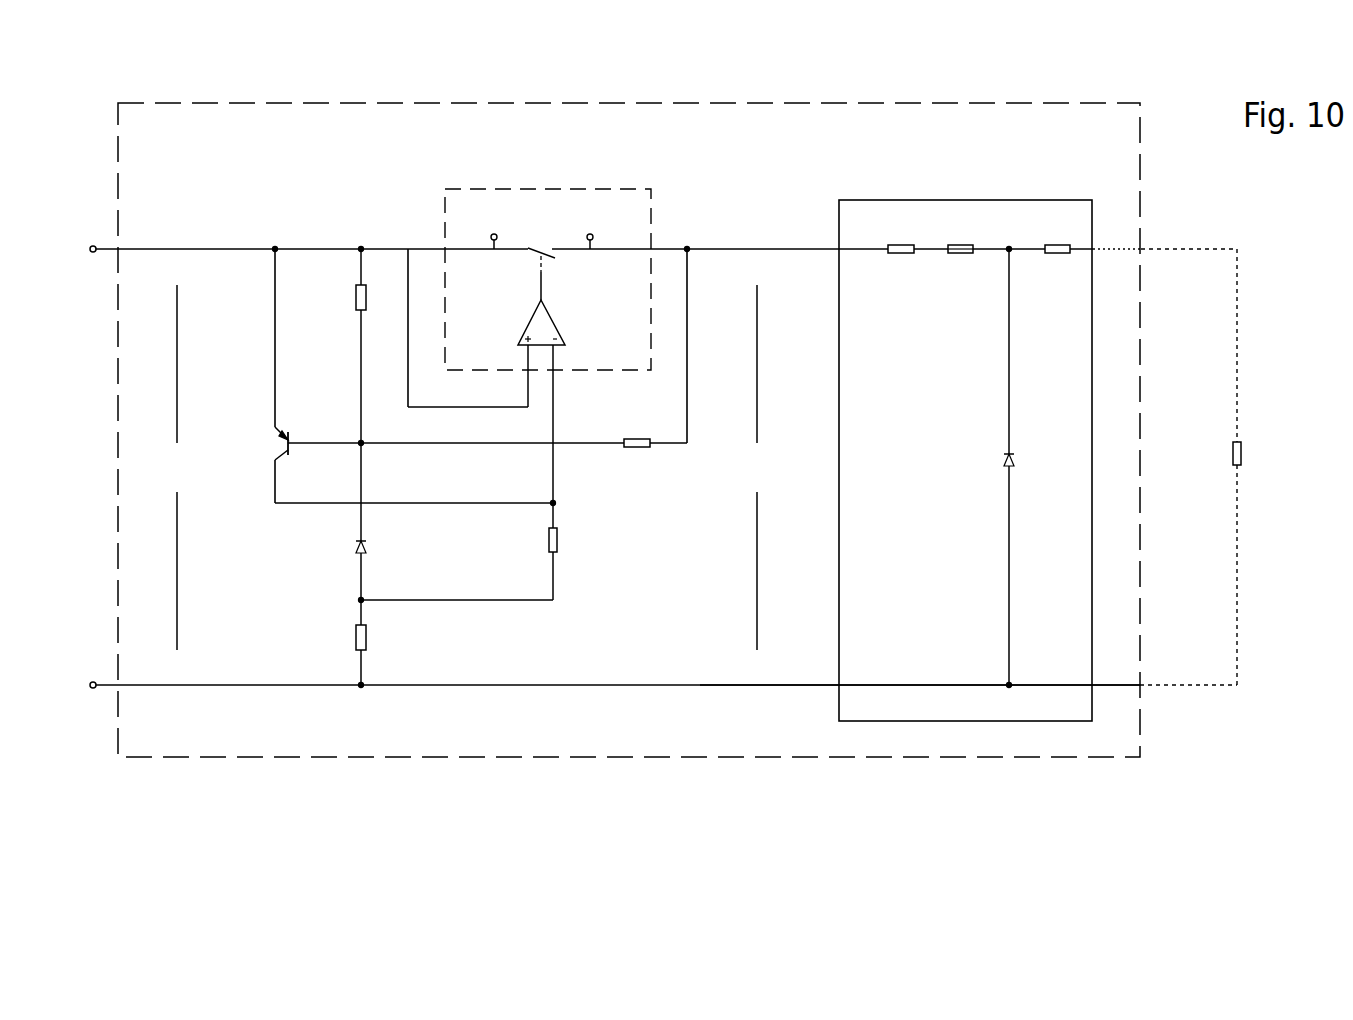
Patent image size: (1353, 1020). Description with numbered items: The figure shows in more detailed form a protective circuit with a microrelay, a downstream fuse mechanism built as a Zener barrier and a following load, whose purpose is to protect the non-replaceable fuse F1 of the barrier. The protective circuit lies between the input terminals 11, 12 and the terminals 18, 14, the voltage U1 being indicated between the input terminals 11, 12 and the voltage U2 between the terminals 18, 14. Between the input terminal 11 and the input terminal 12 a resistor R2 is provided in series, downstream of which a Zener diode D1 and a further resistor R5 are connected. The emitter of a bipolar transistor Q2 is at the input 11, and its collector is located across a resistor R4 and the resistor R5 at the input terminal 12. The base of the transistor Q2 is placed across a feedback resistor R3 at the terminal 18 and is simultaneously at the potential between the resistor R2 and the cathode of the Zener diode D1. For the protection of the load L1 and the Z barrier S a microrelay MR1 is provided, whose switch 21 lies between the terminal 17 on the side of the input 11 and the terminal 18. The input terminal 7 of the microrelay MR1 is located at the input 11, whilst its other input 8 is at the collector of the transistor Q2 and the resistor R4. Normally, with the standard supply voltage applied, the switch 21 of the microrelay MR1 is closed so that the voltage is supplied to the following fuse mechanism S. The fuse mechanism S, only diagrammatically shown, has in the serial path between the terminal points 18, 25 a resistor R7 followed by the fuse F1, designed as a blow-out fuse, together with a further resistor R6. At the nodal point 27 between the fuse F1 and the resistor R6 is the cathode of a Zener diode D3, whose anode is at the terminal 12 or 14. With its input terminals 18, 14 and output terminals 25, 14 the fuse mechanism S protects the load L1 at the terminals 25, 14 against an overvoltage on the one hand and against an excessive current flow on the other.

The input terminal 11 is at (89, 247).
The input terminal 12 is at (89, 687).
The terminal 14 is at (839, 685).
The terminal of switch 21 17 is at (488, 221).
The terminal 18 is at (839, 249).
The switch 21 is at (542, 237).
The output terminal 25 is at (1141, 249).
The nodal point 27 is at (1011, 244).
The input terminal of microrelay 7 is at (468, 329).
The input of microrelay 8 is at (568, 424).
The voltage U1 is at (172, 467).
The voltage U2 is at (757, 467).
The bipolar transistor Q2 is at (449, 375).
The resistor R2 is at (340, 394).
The feedback resistor R3 is at (657, 371).
The resistor R4 is at (479, 551).
The resistor R5 is at (339, 643).
The Zener diode D1 is at (339, 566).
The microrelay MR1 is at (567, 322).
The fuse mechanism S is at (950, 199).
The resistor R7 is at (897, 267).
The fuse F1 is at (956, 267).
The resistor R6 is at (1054, 267).
The Zener diode D3 is at (987, 468).
The load L1 is at (1208, 467).